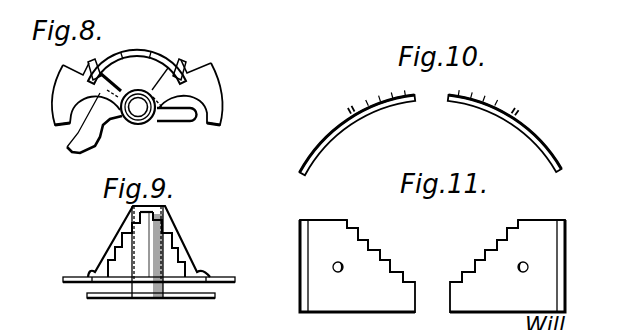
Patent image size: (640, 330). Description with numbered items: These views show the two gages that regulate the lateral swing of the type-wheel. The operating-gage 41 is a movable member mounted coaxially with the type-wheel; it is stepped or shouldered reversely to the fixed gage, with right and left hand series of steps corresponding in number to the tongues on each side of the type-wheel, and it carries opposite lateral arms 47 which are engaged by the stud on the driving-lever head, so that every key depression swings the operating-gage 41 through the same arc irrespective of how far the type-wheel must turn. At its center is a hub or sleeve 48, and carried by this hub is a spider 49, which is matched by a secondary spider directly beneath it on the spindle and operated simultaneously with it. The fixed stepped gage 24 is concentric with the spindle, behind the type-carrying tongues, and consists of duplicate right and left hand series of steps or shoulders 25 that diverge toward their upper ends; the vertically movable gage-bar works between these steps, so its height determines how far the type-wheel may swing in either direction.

In FIG. 8, the operating-gage 41 is at (157, 58).
In FIG. 9, the operating-gage 41 is at (181, 242).
In FIG. 8, the lateral arms 47 is at (62, 88).
In FIG. 9, the lateral arms 47 is at (73, 277).
In FIG. 8, the hub or sleeve 48 is at (138, 117).
In FIG. 9, the hub or sleeve 48 is at (148, 245).
In FIG. 8, the spider 49 is at (100, 135).
In FIG. 9, the spider 49 is at (175, 298).
In FIG. 10, the stepped gage 24 is at (431, 135).
In FIG. 11, the stepped gage 24 is at (432, 266).
In FIG. 10, the steps or shoulders 25 is at (357, 118).
In FIG. 11, the steps or shoulders 25 is at (368, 243).